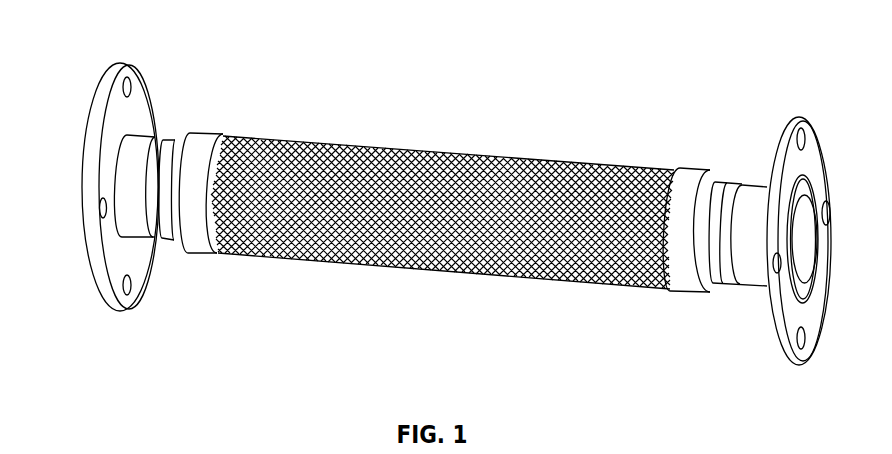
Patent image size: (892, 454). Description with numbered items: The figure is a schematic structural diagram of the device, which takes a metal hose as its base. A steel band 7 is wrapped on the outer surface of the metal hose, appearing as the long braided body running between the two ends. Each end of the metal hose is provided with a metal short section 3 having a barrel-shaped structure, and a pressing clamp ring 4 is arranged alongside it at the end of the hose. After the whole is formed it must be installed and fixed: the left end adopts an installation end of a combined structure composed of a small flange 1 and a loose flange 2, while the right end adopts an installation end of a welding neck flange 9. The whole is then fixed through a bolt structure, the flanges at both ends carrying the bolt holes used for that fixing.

The small flange 1 is at (82, 215).
The loose flange 2 is at (144, 238).
The metal short section 3 is at (162, 240).
The pressing clamp ring 4 is at (201, 245).
The steel band 7 is at (332, 262).
The welding neck flange 9 is at (755, 263).